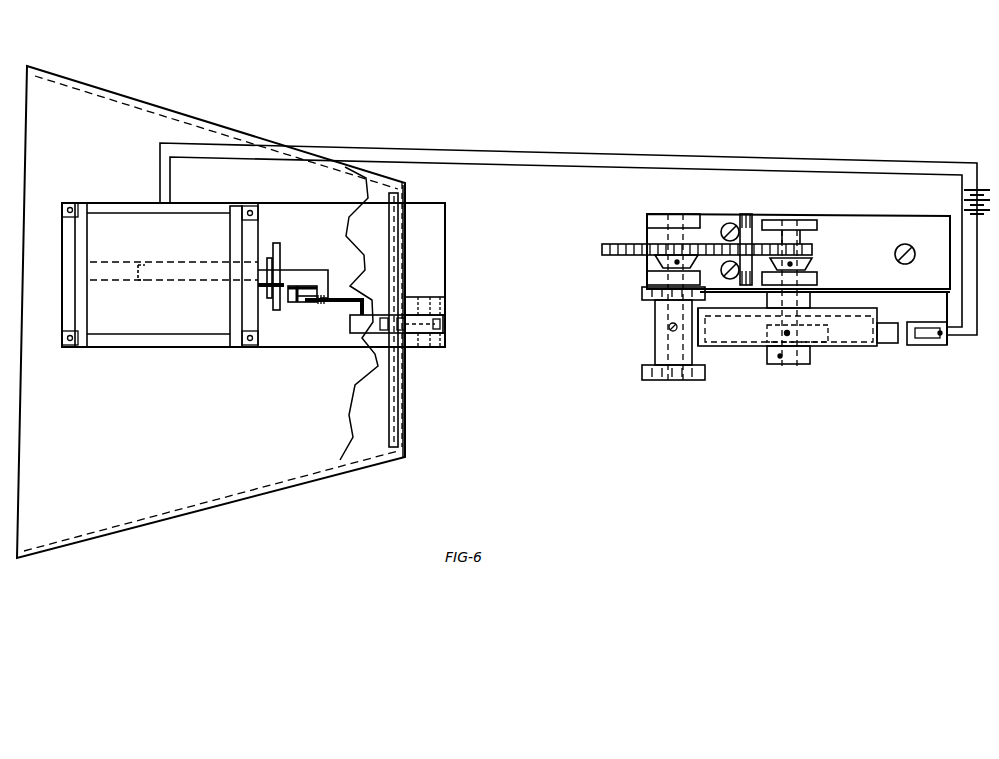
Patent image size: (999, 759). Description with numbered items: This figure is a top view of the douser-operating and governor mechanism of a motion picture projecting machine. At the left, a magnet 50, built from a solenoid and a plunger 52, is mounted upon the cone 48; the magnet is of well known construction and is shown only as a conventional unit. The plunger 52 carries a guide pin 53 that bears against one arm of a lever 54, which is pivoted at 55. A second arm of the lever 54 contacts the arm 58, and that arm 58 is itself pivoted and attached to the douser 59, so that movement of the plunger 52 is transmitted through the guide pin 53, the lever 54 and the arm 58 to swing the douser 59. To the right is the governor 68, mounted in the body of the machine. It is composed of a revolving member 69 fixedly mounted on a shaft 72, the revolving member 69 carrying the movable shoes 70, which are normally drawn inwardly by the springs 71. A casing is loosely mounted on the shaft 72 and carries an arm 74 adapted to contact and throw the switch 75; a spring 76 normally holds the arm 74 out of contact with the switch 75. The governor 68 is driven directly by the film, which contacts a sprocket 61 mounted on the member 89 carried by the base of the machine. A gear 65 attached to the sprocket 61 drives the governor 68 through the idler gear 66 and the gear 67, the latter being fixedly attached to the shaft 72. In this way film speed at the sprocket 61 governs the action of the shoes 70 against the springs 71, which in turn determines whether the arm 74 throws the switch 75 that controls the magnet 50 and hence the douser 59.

The cone 48 is at (215, 490).
The magnet 50 is at (160, 275).
The plunger 52 is at (292, 270).
The guide pin 53 is at (322, 290).
The lever 54 is at (338, 300).
The pivot 55 is at (302, 303).
The arm 58 is at (378, 364).
The douser 59 is at (392, 381).
The sprocket 61 is at (657, 348).
The gear 65 is at (608, 244).
The idler gear 66 is at (754, 252).
The gear 67 is at (814, 253).
The governor 68 is at (855, 316).
The revolving member 69 is at (820, 348).
The movable shoes 70 is at (750, 346).
The springs 71 is at (792, 333).
The shaft 72 is at (790, 222).
The arm 74 is at (888, 347).
The switch 75 is at (930, 347).
The spring 76 is at (797, 334).
The member 89 is at (647, 219).